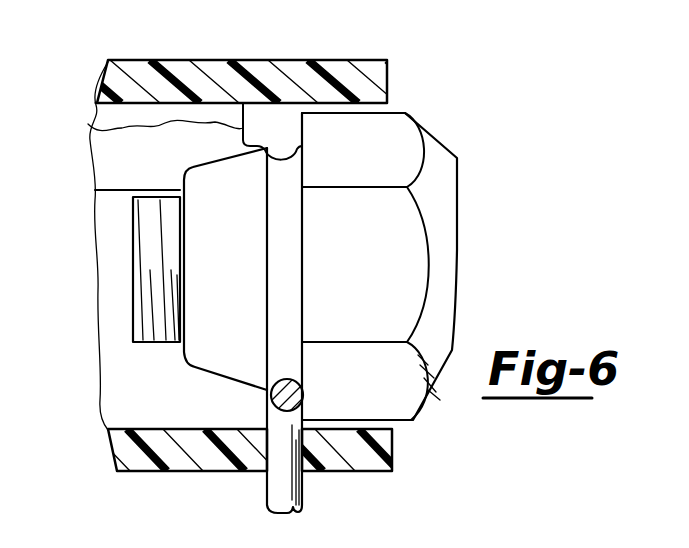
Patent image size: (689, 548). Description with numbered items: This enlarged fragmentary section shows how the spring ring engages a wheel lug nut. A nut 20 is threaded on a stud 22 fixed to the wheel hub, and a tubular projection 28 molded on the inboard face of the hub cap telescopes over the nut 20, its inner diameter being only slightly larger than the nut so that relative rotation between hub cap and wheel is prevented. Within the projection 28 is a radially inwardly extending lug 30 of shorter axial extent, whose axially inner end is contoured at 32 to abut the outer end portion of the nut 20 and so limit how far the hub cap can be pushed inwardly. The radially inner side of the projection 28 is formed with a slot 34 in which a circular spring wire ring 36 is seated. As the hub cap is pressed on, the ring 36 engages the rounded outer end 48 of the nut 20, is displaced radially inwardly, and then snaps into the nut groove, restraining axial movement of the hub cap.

The nut 20 is at (418, 140).
The stud 22 is at (145, 265).
The tubular projection 28 is at (355, 66).
The lug 30 is at (122, 182).
The contoured end 32 is at (198, 158).
The slot 34 is at (270, 472).
The spring wire ring 36 is at (303, 488).
The rounded outer end 48 is at (220, 380).